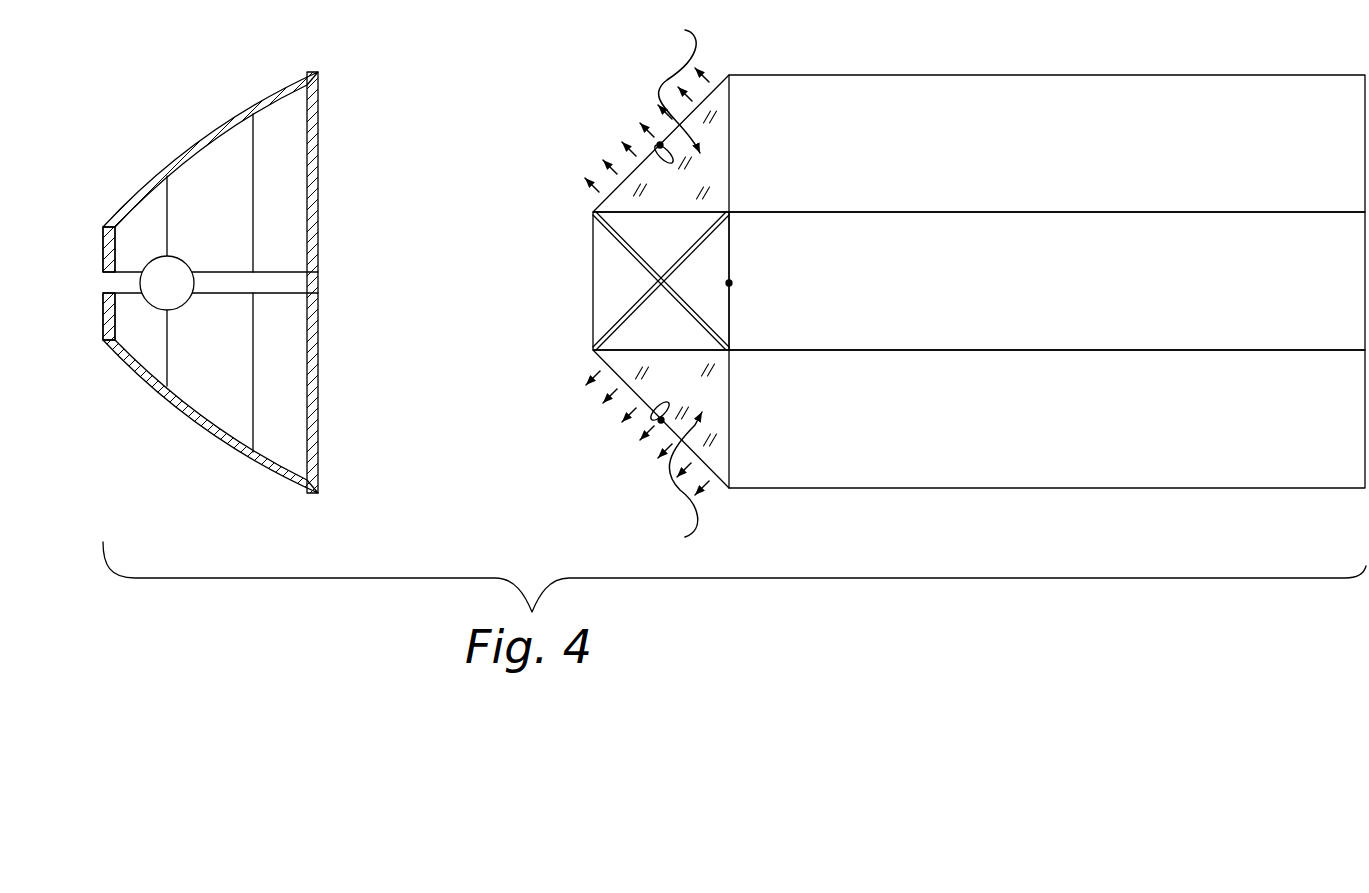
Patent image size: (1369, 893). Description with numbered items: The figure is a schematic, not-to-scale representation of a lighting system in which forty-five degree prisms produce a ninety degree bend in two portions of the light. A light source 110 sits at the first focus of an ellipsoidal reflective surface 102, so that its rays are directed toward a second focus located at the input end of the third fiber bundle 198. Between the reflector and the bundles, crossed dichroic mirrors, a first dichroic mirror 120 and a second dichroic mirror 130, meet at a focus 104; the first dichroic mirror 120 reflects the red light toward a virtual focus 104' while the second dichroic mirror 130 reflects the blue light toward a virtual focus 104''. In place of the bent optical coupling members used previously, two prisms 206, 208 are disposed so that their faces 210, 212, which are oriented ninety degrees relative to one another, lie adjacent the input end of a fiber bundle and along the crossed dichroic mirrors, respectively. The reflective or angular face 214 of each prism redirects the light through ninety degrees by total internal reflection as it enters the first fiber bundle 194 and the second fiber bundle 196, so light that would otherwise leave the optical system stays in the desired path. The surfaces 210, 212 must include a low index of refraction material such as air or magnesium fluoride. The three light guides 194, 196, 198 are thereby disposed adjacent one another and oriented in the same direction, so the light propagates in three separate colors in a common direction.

The ellipsoidal reflective surface 102 is at (208, 144).
The light source 110 is at (173, 272).
The first fiber bundle 194 is at (1180, 159).
The third fiber bundle 198 is at (1180, 299).
The second fiber bundle 196 is at (1180, 438).
The prism face 210 is at (730, 158).
The virtual focus 104 is at (715, 281).
The first dichroic mirror 120 is at (707, 242).
The second dichroic mirror 130 is at (707, 323).
The prism face 212 is at (665, 212).
The reflective angular face 214 is at (615, 184).
The prism 208 is at (672, 86).
The prism 206 is at (673, 480).
The virtual focus 104' is at (618, 118).
The virtual focus 104'' is at (616, 448).